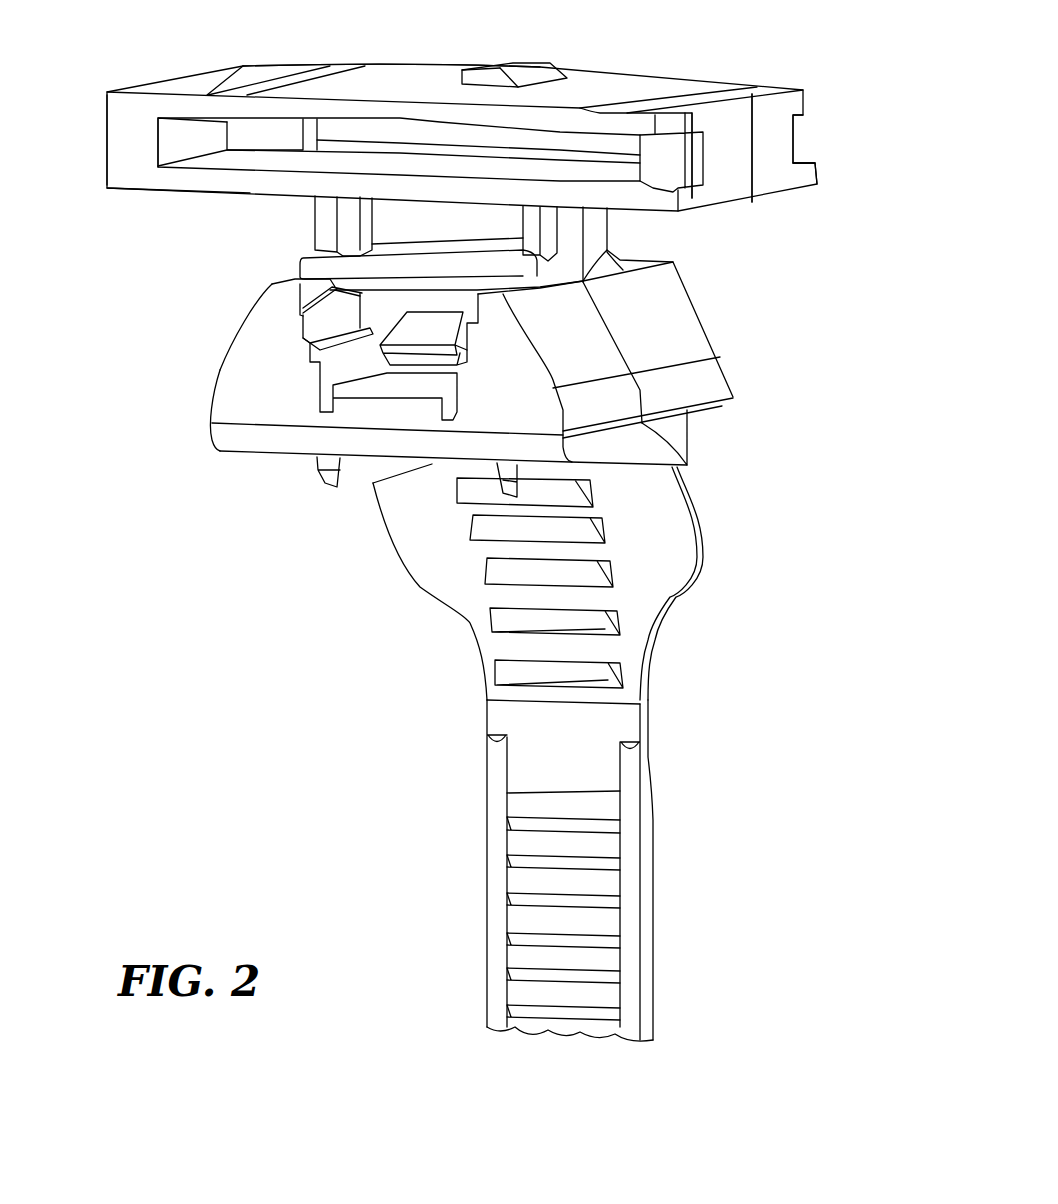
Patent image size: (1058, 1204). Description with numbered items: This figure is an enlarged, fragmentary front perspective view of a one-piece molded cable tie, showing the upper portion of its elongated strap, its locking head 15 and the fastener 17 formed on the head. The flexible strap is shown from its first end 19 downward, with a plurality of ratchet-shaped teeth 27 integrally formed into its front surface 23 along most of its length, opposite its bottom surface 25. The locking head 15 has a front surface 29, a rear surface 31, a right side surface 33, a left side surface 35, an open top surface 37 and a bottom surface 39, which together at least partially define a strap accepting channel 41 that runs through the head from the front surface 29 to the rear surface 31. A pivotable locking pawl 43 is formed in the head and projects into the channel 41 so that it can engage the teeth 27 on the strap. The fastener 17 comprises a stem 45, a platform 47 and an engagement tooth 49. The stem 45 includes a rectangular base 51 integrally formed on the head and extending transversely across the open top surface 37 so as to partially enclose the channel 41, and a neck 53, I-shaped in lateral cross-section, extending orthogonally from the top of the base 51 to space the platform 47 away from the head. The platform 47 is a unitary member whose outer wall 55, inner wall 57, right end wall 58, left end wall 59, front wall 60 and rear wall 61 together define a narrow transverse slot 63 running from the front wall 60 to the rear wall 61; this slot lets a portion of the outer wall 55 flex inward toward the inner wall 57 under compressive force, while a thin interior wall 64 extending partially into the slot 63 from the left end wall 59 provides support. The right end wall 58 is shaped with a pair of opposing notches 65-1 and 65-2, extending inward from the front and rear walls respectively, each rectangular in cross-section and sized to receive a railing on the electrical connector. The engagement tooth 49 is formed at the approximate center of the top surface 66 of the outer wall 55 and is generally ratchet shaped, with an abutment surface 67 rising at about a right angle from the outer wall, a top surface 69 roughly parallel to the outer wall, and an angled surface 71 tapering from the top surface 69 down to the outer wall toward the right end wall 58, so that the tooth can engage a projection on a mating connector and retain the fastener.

The locking head 15 is at (217, 450).
The fastener 17 is at (215, 75).
The first end 19 is at (680, 518).
The front surface 23 is at (632, 920).
The bottom surface 25 is at (653, 975).
The ratchet-shaped teeth 27 is at (527, 952).
The front surface 29 is at (225, 410).
The rear surface 31 is at (718, 338).
The right side surface 33 is at (690, 378).
The left side surface 35 is at (220, 370).
The open top surface 37 is at (292, 282).
The bottom surface 39 is at (277, 456).
The strap accepting channel 41 is at (353, 315).
The locking pawl 43 is at (430, 347).
The stem 45 is at (315, 232).
The platform 47 is at (123, 192).
The engagement tooth 49 is at (495, 63).
The rectangular base 51 is at (428, 282).
The neck 53 is at (600, 218).
The outer wall 55 is at (340, 108).
The inner wall 57 is at (180, 178).
The right end wall 58 is at (783, 175).
The left end wall 59 is at (107, 152).
The front wall 60 is at (130, 114).
The rear wall 61 is at (790, 90).
The transverse slot 63 is at (585, 145).
The interior wall 64 is at (270, 130).
The notch 65-1 is at (680, 160).
The notch 65-2 is at (797, 132).
The top surface 66 is at (677, 82).
The abutment surface 67 is at (447, 78).
The top surface 69 is at (523, 62).
The angled surface 71 is at (540, 72).